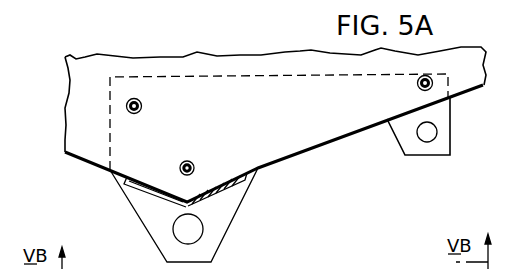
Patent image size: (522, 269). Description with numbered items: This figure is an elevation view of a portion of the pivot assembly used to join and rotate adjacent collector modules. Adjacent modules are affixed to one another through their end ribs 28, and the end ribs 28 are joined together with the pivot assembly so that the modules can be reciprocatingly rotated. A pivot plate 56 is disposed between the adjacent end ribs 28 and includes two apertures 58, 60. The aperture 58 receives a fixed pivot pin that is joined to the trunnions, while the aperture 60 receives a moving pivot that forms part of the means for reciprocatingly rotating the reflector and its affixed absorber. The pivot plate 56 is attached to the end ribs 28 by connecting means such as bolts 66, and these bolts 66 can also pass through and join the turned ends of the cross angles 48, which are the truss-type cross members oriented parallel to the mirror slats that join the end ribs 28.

The end rib 28 is at (80, 99).
The cross angle 48 is at (153, 188).
The pivot plate 56 is at (228, 203).
The aperture 58 is at (192, 230).
The aperture 60 is at (426, 140).
The bolt 66 is at (142, 107).